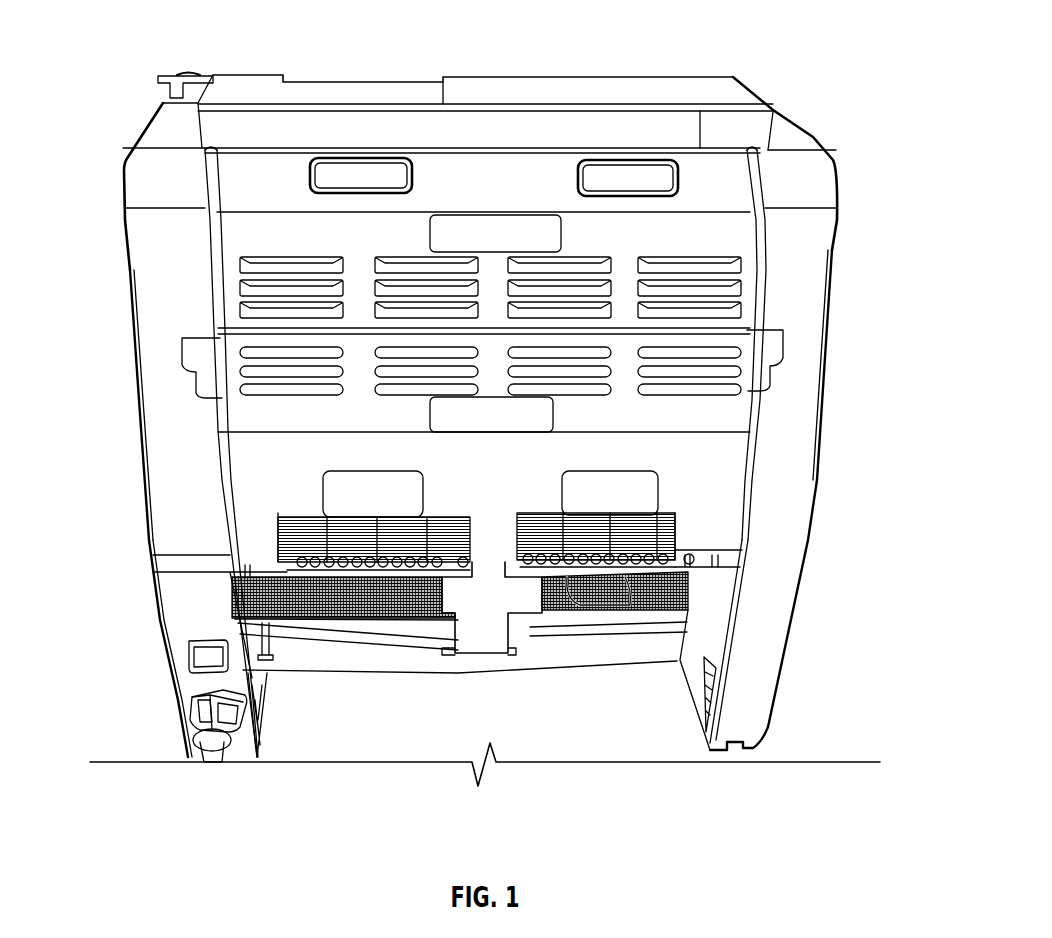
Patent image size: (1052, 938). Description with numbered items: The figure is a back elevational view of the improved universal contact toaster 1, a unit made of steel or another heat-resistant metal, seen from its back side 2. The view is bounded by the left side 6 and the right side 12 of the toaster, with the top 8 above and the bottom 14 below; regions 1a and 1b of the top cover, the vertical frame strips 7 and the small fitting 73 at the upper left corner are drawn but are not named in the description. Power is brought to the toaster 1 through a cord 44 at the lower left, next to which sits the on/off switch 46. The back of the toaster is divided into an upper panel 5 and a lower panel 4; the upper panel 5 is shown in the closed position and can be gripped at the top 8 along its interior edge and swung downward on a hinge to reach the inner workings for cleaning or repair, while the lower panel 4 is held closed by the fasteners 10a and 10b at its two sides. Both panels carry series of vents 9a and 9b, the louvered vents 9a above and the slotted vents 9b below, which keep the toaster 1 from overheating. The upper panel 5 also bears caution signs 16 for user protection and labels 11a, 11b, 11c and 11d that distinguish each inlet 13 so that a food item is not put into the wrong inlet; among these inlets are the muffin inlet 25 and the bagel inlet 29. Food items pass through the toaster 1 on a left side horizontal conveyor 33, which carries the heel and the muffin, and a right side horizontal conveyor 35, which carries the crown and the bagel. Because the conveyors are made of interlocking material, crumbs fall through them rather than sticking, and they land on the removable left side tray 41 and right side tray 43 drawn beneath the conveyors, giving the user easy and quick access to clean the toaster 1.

The universal contact toaster 1 is at (830, 318).
The left top cover portion 1a is at (390, 130).
The right top cover portion 1b is at (585, 150).
The back side 2 is at (815, 553).
The lower panel 4 is at (775, 502).
The upper panel 5 is at (838, 185).
The left side 6 is at (125, 292).
The vertical frame strips 7 is at (203, 210).
The top 8 is at (520, 110).
The vents 9a is at (735, 275).
The vents 9b is at (730, 392).
The fastener 10a is at (186, 368).
The fastener 10b is at (783, 345).
The label 11a is at (330, 160).
The label 11b is at (660, 165).
The label 11c is at (312, 500).
The label 11d is at (658, 488).
The right side 12 is at (832, 278).
The inlet 13 is at (585, 575).
The bottom 14 is at (645, 660).
The caution signs 16 is at (508, 215).
The muffin inlet 25 is at (428, 600).
The bagel inlet 29 is at (627, 565).
The left side horizontal conveyor 33 is at (285, 548).
The right side horizontal conveyor 35 is at (740, 553).
The left side tray 41 is at (345, 640).
The right side tray 43 is at (542, 620).
The cord 44 is at (207, 760).
The on/off switch 46 is at (190, 658).
The top latch 73 is at (188, 68).